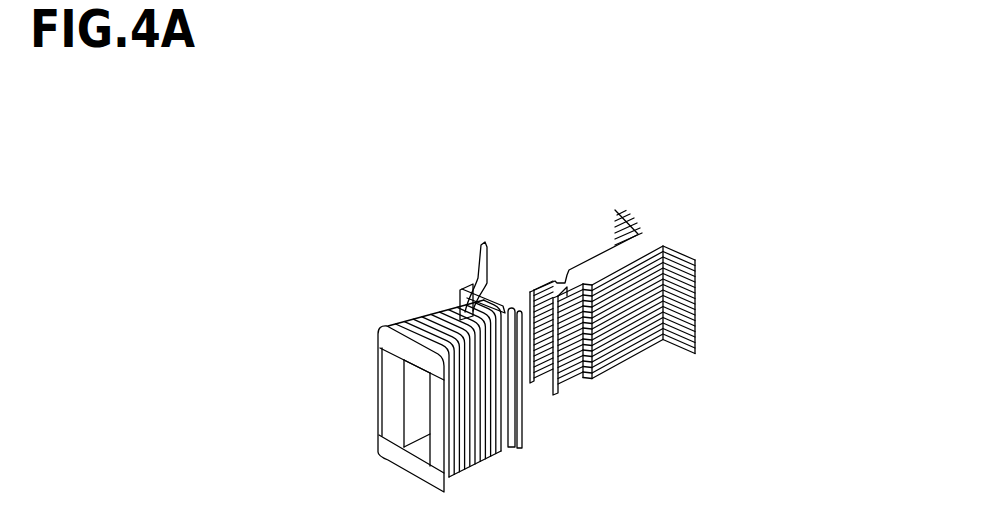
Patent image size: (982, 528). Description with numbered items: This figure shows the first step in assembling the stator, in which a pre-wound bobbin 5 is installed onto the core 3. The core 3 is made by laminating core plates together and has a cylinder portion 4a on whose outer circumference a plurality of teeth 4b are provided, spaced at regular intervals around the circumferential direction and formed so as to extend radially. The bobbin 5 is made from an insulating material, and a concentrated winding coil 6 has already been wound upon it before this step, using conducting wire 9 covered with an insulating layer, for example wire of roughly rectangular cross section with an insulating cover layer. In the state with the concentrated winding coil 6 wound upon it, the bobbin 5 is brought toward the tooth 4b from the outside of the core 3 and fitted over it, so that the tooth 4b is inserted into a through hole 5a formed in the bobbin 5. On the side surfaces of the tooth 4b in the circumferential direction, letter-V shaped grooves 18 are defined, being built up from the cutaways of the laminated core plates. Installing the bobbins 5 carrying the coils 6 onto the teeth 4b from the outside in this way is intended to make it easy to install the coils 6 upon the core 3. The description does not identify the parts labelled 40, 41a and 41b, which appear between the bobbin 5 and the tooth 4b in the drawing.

The core 3 is at (655, 356).
The cylinder portion 4a is at (678, 238).
The tooth 4b is at (608, 250).
The bobbin 5 is at (388, 381).
The through hole 5a is at (417, 398).
The concentrated winding coil 6 is at (378, 277).
The conducting wire 9 is at (430, 322).
The letter-V shaped groove 18 is at (590, 378).
The pole piece 40 is at (598, 268).
The first plate 41a is at (545, 380).
The second plate 41b is at (563, 382).